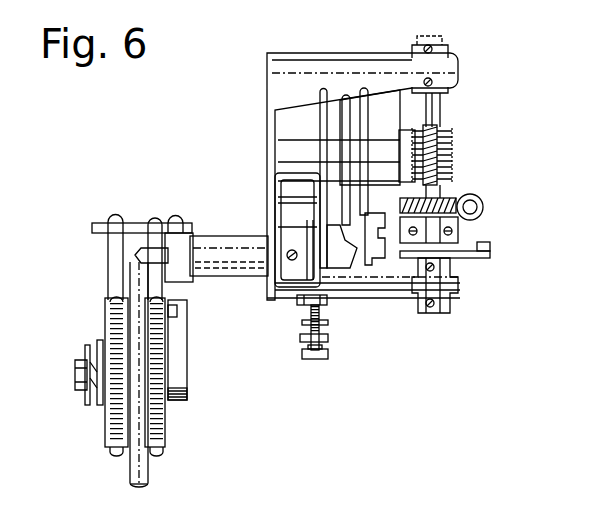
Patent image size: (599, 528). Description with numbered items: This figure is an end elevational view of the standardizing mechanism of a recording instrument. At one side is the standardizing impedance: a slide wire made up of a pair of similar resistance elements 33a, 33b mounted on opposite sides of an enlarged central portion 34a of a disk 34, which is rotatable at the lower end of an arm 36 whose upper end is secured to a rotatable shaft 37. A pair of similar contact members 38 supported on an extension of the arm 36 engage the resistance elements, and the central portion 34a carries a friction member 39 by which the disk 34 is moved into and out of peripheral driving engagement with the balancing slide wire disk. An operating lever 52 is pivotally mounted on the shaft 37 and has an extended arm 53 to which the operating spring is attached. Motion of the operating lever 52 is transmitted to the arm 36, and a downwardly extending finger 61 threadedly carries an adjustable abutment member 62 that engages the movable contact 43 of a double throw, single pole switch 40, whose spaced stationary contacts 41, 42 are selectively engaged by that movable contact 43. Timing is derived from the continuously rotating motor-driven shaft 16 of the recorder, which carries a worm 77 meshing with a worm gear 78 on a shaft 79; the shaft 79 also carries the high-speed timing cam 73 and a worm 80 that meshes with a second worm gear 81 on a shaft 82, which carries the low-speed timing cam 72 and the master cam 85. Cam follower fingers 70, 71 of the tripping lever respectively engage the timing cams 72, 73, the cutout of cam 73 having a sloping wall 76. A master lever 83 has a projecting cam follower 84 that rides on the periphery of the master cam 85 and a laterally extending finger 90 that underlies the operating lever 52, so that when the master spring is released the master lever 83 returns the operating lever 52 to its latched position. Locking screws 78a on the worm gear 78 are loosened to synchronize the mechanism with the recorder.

The motor-driven shaft 16 is at (474, 206).
The resistance element 33a is at (165, 445).
The resistance element 33b is at (118, 451).
The disk 34 is at (108, 318).
The enlarged central portion 34a is at (148, 470).
The arm 36 is at (183, 330).
The rotatable shaft 37 is at (149, 252).
The contact members 38 is at (108, 272).
The friction member 39 is at (140, 488).
The double throw, single pole switch 40 is at (308, 339).
The stationary contact 41 is at (302, 322).
The stationary contact 42 is at (305, 356).
The movable contact 43 is at (300, 340).
The operating lever 52 is at (318, 278).
The extended arm 53 is at (320, 118).
The finger 61 is at (297, 300).
The abutment member 62 is at (321, 312).
The cam follower finger 70 is at (382, 239).
The cam follower finger 71 is at (373, 265).
The timing cam 72 is at (363, 97).
The timing cam 73 is at (470, 259).
The sloping wall 76 is at (492, 249).
The worm 77 is at (483, 197).
The worm gear 78 is at (452, 198).
The locking screws 78a is at (450, 230).
The shaft 79 is at (440, 110).
The worm 80 is at (450, 140).
The worm gear 81 is at (405, 130).
The shaft 82 is at (387, 148).
The master lever 83 is at (277, 197).
The cam follower 84 is at (330, 243).
The master cam 85 is at (345, 100).
The finger 90 is at (332, 255).